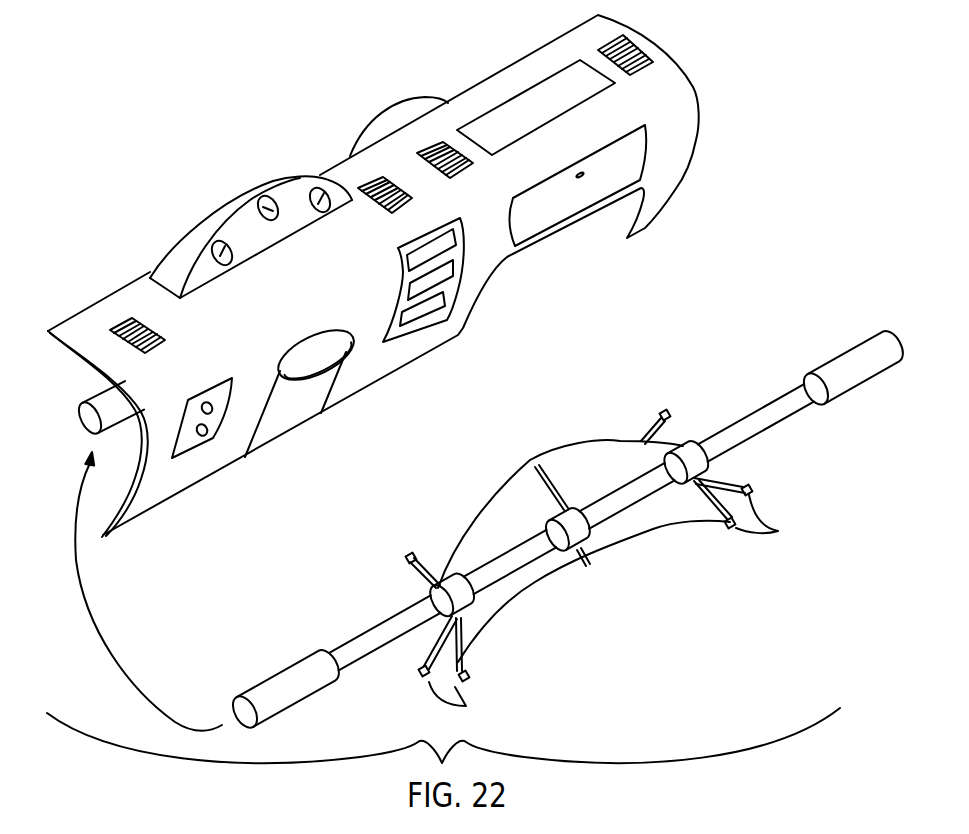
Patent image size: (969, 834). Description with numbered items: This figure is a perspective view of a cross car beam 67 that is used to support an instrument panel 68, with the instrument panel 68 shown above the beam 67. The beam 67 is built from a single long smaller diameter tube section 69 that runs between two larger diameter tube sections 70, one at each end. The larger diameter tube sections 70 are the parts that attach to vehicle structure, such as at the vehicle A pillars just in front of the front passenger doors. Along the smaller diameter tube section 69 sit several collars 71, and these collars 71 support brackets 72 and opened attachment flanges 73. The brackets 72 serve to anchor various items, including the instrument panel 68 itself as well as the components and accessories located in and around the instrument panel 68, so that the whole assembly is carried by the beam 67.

The cross car beam 67 is at (70, 440).
The instrument panel 68 is at (467, 54).
The smaller diameter tube section 69 is at (515, 543).
The larger diameter tube sections 70 is at (284, 683).
The collars 71 is at (472, 593).
The brackets 72 is at (672, 520).
The opened attachment flanges 73 is at (408, 555).